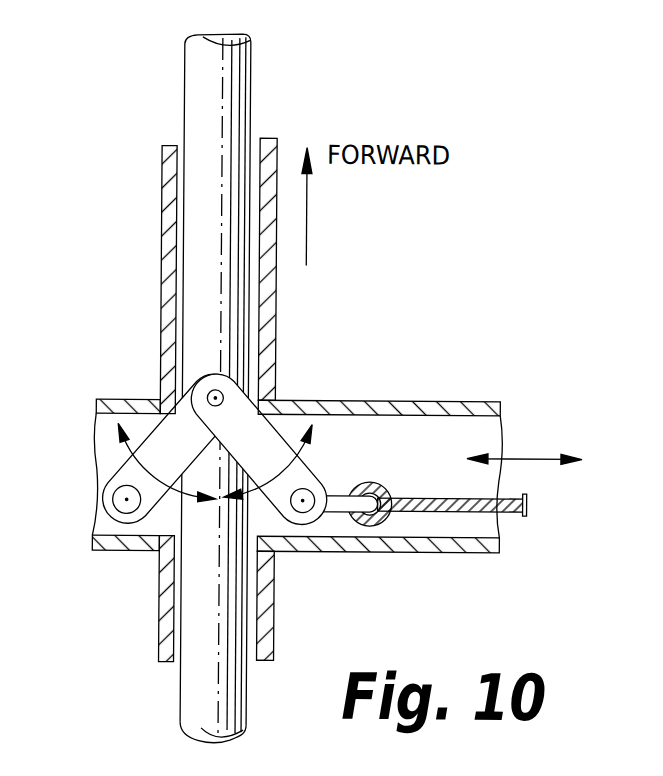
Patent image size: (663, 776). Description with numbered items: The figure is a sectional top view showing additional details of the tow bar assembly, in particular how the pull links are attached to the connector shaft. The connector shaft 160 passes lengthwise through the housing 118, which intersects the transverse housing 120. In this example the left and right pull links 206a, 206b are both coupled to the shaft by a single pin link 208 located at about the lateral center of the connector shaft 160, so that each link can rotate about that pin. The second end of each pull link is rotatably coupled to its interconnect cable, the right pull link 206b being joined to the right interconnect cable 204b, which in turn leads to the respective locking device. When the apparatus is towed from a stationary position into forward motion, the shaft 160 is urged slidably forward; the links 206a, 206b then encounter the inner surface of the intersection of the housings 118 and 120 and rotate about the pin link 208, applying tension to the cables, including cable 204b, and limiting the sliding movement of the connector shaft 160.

The connector shaft 160 is at (183, 62).
The housing 118 is at (162, 216).
The housing 120 is at (414, 402).
The pin link 208 is at (208, 396).
The left pull link 206a is at (158, 448).
The right pull link 206b is at (243, 403).
The right interconnect cable 204b is at (437, 506).